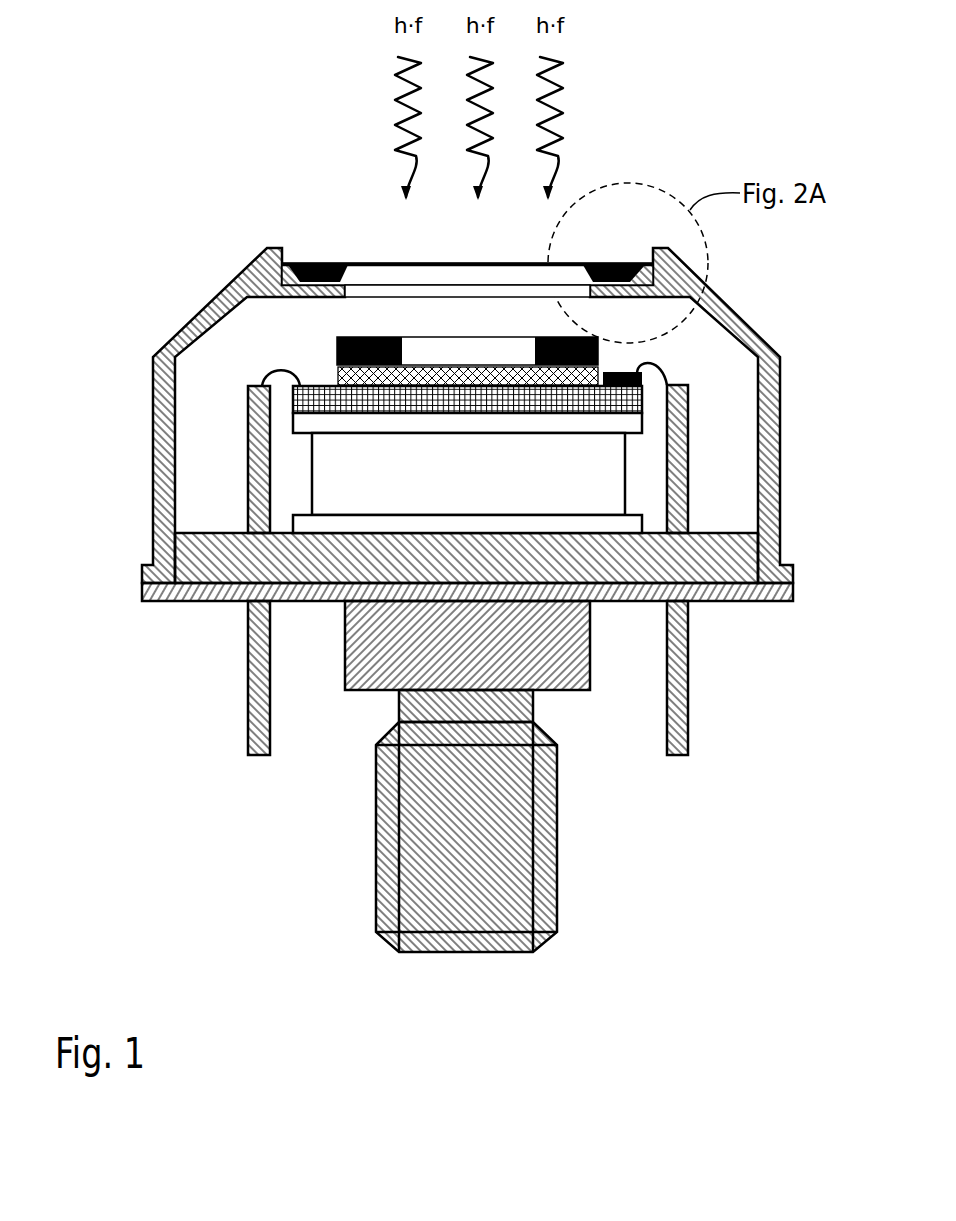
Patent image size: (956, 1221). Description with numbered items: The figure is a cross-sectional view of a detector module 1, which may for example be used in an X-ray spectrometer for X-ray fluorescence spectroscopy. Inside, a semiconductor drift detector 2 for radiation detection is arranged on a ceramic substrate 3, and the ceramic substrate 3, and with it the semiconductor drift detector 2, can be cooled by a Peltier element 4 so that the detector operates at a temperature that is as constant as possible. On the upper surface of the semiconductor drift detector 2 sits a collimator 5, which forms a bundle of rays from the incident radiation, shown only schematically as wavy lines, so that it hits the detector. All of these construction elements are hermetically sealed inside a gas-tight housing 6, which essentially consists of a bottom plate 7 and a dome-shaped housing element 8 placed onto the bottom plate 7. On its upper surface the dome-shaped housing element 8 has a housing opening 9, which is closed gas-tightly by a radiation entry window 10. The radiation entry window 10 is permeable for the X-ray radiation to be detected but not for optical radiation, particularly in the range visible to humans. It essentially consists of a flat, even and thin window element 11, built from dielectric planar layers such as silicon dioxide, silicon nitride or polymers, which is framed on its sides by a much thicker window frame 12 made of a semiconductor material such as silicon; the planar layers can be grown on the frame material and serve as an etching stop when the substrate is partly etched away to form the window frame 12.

The detector module 1 is at (167, 818).
The semiconductor drift detector 2 is at (338, 348).
The ceramic substrate 3 is at (293, 398).
The Peltier element 4 is at (335, 457).
The collimator 5 is at (338, 372).
The gas-tight housing 6 is at (132, 430).
The bottom plate 7 is at (203, 594).
The dome-shaped housing element 8 is at (153, 495).
The housing opening 9 is at (458, 295).
The radiation entry window 10 is at (395, 245).
The window element 11 is at (523, 263).
The window frame 12 is at (317, 263).